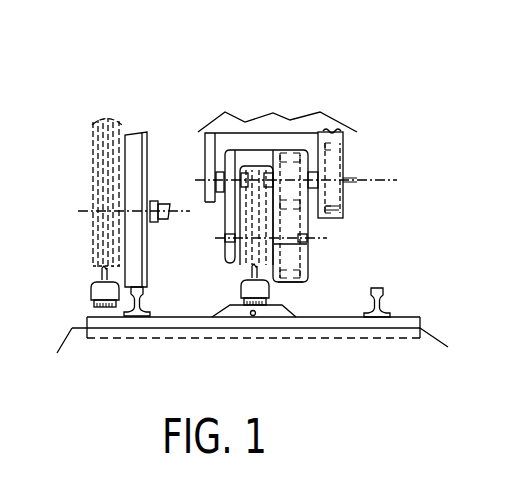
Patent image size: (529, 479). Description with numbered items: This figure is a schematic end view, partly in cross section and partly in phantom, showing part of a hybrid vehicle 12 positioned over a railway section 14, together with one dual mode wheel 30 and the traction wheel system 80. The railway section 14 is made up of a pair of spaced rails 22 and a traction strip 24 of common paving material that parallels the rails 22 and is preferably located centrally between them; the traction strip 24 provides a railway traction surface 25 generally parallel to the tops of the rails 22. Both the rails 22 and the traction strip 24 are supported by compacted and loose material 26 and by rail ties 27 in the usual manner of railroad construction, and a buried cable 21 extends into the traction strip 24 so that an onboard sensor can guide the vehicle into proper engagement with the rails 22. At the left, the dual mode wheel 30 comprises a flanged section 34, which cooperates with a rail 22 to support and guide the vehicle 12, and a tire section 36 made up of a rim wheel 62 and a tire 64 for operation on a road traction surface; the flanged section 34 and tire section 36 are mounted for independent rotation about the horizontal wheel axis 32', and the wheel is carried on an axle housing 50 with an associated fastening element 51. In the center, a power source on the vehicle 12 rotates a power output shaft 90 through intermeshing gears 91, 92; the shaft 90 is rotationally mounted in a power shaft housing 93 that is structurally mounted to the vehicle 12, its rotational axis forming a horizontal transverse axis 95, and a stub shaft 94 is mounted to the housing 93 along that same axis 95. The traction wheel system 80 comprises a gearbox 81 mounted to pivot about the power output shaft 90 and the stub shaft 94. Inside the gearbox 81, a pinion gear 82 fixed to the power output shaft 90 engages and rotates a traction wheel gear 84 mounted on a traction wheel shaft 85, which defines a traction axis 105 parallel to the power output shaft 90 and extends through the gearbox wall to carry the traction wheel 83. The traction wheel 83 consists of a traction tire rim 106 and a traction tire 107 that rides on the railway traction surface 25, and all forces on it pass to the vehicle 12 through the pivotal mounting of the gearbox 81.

The railway section 14 is at (437, 272).
The rail ties 27 is at (425, 321).
The compacted and loose material 26 is at (449, 347).
The traction strip 24 is at (222, 312).
The railway traction surface 25 is at (282, 305).
The buried cable 21 is at (253, 316).
The rails 22 is at (141, 300).
The dual mode wheel 30 is at (117, 82).
The tire section 36 is at (100, 120).
The flanged section 34 is at (137, 133).
The horizontal wheel axis 32' is at (115, 197).
The axle housing 50 is at (157, 202).
The fastener 51 is at (170, 204).
The rim wheel 62 is at (100, 280).
The tire 64 is at (92, 297).
The traction wheel system 80 is at (363, 230).
The hybrid vehicle 12 is at (225, 112).
The traction wheel 83 is at (256, 178).
The pinion gear 82 is at (290, 149).
The stub shaft 94 is at (235, 175).
The traction wheel gear 84 is at (303, 265).
The traction wheel shaft 85 is at (288, 244).
The gearbox 81 is at (304, 287).
The traction axis 105 is at (220, 238).
The intermeshing gear 91 is at (341, 155).
The intermeshing gear 92 is at (344, 166).
The power output shaft 90 is at (346, 178).
The power shaft housing 93 is at (343, 202).
The transverse axis 95 is at (381, 180).
The traction tire rim 106 is at (252, 268).
The traction tire 107 is at (241, 292).